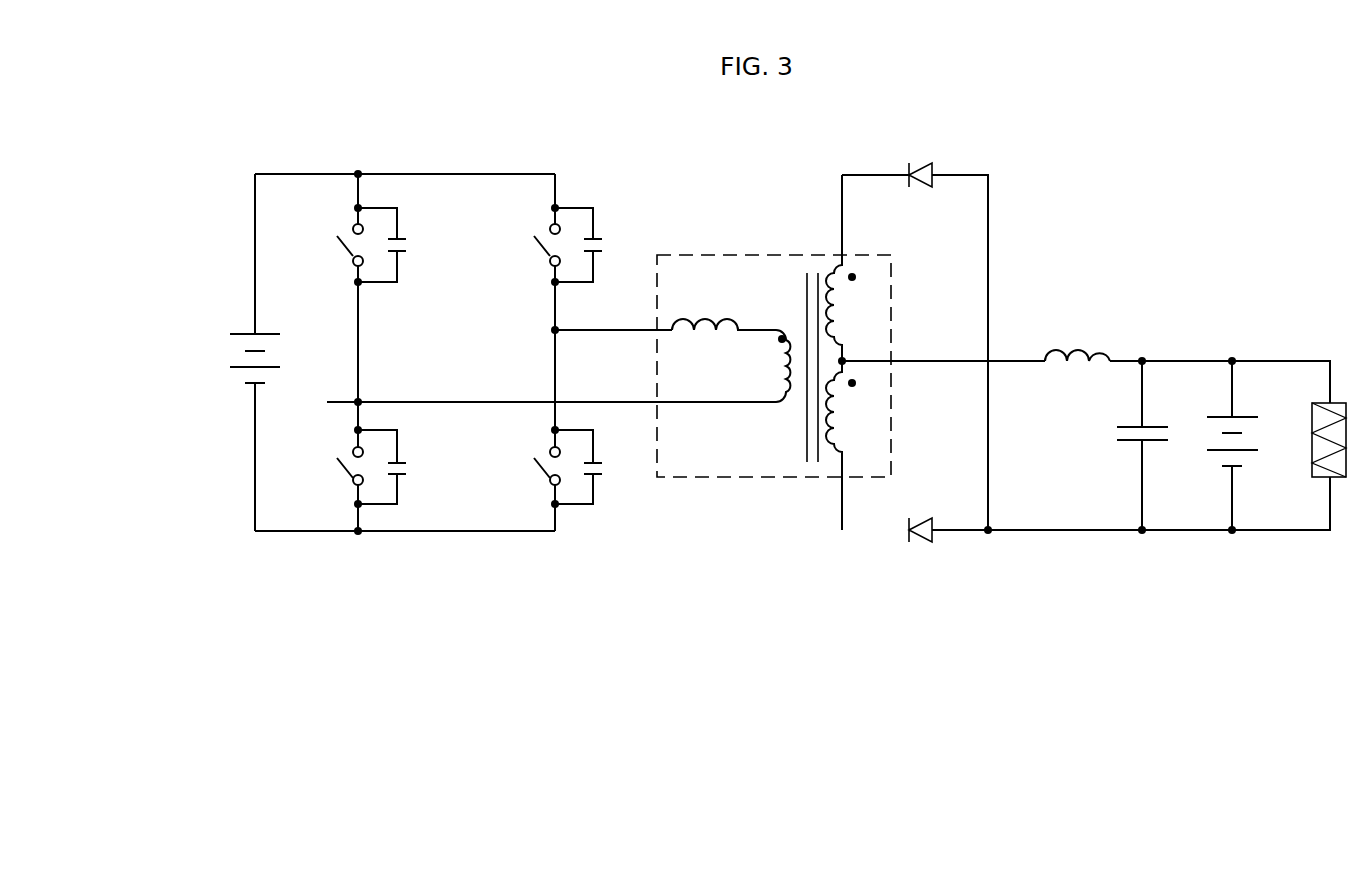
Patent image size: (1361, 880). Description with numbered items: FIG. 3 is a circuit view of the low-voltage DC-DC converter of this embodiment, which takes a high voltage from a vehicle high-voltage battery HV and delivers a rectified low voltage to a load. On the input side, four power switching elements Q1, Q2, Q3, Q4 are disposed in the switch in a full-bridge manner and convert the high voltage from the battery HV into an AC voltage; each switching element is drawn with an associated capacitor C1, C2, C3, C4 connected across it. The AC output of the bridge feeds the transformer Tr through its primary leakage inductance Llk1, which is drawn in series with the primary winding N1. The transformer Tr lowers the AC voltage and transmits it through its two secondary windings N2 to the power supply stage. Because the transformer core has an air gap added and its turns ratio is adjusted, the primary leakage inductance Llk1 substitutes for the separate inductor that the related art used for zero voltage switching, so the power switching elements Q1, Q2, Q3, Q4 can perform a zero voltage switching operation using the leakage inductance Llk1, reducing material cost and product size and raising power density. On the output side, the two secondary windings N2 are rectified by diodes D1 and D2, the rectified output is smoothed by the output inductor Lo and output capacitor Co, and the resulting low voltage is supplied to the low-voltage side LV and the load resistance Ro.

The high-voltage battery / input source HV is at (233, 358).
The power switching element Q1 is at (333, 245).
The power switching element Q2 is at (333, 467).
The power switching element Q3 is at (530, 245).
The power switching element Q4 is at (530, 467).
The first snubber capacitor C1 is at (401, 245).
The second snubber capacitor C2 is at (401, 467).
The third snubber capacitor C3 is at (598, 245).
The fourth snubber capacitor C4 is at (598, 467).
The transformer with air-gap core Tr is at (774, 349).
The leakage inductance Llk1 is at (724, 308).
The primary winding N1 is at (765, 366).
The secondary windings N2 is at (856, 352).
The first rectifier diode D1 is at (922, 190).
The second rectifier diode D2 is at (922, 515).
The output inductor Lo is at (1077, 340).
The output capacitor Co is at (1136, 454).
The low-voltage battery / output LV is at (1221, 449).
The load resistor Ro is at (1319, 455).